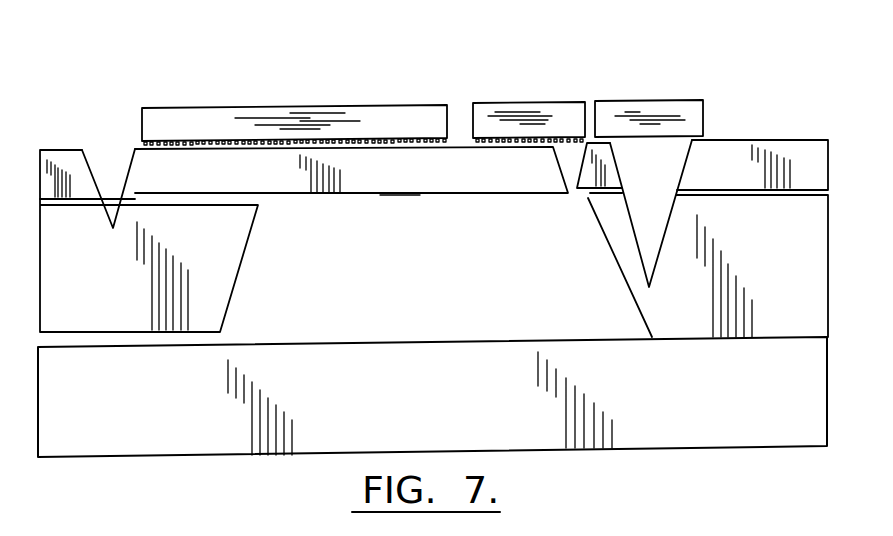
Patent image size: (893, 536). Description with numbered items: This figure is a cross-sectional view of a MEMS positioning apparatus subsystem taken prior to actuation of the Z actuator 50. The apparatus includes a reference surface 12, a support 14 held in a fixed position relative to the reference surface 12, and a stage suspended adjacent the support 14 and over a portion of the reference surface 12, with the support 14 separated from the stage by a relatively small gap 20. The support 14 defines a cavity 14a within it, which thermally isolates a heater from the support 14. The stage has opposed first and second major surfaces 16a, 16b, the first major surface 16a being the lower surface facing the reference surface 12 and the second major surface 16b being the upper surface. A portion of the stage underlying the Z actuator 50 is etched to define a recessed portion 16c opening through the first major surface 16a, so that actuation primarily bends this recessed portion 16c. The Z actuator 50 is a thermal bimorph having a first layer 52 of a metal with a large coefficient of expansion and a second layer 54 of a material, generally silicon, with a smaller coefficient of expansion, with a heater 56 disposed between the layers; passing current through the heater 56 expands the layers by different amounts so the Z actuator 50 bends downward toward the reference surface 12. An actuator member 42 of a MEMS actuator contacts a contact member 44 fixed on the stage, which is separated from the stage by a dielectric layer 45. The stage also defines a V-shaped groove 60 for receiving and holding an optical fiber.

The reference surface 12 is at (338, 345).
The support 14 is at (813, 238).
The cavity 14a is at (653, 190).
The first major surface 16a is at (50, 150).
The second major surface 16b is at (77, 332).
The recessed portion 16c is at (508, 234).
The gap 20 is at (574, 180).
The actuator member 42 is at (663, 100).
The contact member 44 is at (547, 102).
The dielectric layer 45 is at (497, 143).
The Z actuator 50 is at (371, 114).
The first layer 52 is at (330, 105).
The second layer 54 is at (387, 182).
The heater 56 is at (285, 150).
The groove 60 is at (125, 166).